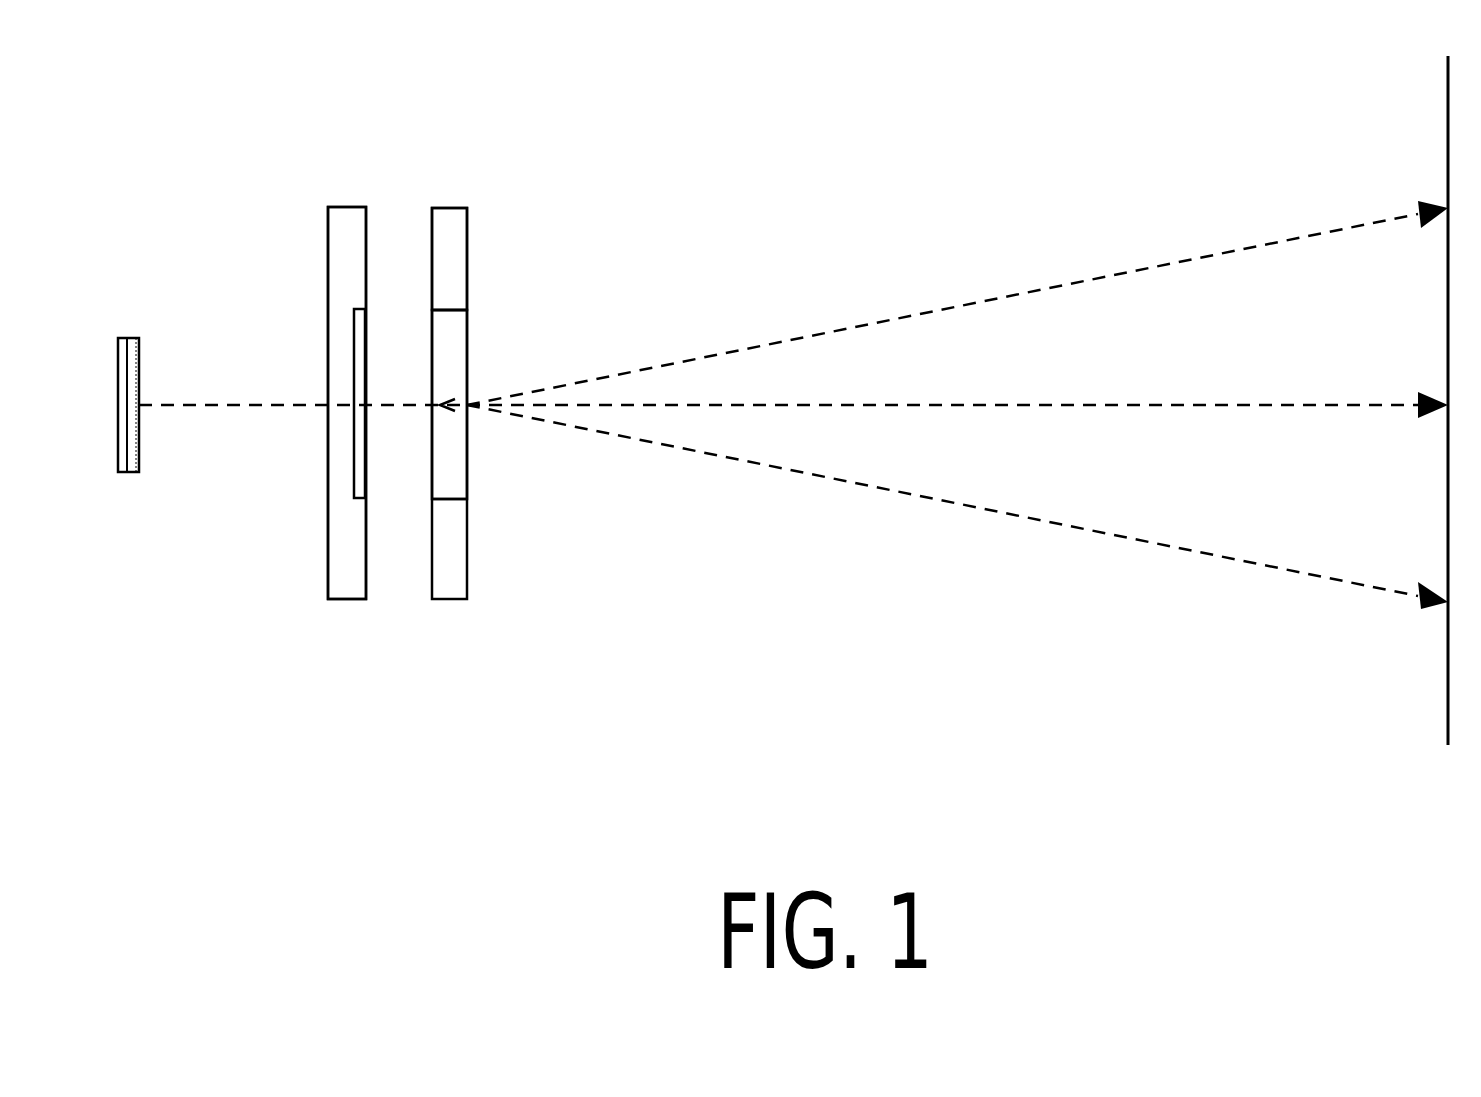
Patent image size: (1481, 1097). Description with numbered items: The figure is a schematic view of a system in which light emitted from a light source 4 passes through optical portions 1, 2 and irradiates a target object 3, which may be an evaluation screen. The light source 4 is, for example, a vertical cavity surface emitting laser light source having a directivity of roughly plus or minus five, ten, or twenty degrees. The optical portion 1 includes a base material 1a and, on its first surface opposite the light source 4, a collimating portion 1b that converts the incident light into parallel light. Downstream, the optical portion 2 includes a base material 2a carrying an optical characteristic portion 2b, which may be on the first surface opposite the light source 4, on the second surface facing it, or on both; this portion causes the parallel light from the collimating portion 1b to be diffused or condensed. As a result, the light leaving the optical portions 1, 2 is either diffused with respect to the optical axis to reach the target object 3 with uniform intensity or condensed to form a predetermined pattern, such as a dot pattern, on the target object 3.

The optical portion 1 is at (312, 238).
The base material 1a is at (350, 207).
The collimating portion 1b is at (365, 336).
The optical portion 2 is at (475, 232).
The base material 2a is at (451, 208).
The optical characteristic portion 2b is at (432, 423).
The target object 3 is at (1448, 168).
The light source 4 is at (128, 338).